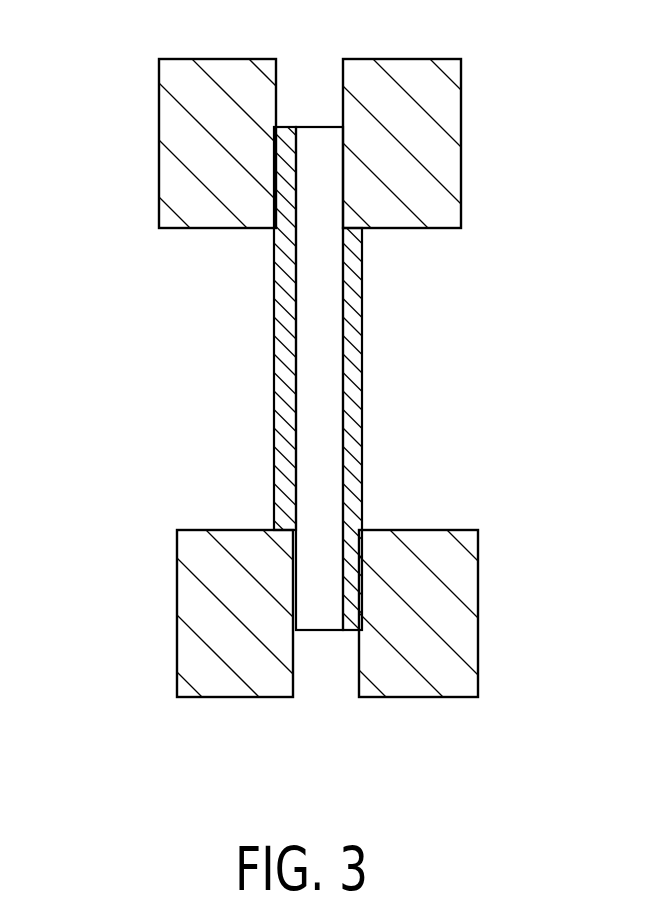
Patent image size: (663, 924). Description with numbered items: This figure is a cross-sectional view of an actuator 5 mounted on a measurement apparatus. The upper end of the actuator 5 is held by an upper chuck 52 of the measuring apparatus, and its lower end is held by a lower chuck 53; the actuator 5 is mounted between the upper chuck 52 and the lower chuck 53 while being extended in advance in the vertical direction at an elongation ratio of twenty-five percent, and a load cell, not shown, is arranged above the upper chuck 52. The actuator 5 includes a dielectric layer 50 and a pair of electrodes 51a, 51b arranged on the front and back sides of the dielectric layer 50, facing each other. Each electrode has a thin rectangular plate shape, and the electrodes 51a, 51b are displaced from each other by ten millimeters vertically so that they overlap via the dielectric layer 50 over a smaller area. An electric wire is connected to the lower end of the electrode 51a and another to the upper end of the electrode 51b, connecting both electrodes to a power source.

The actuator 5 is at (480, 303).
The dielectric layer 50 is at (316, 127).
The electrode 51a is at (274, 402).
The electrode 51b is at (362, 400).
The upper chuck 52 is at (159, 110).
The lower chuck 53 is at (177, 645).